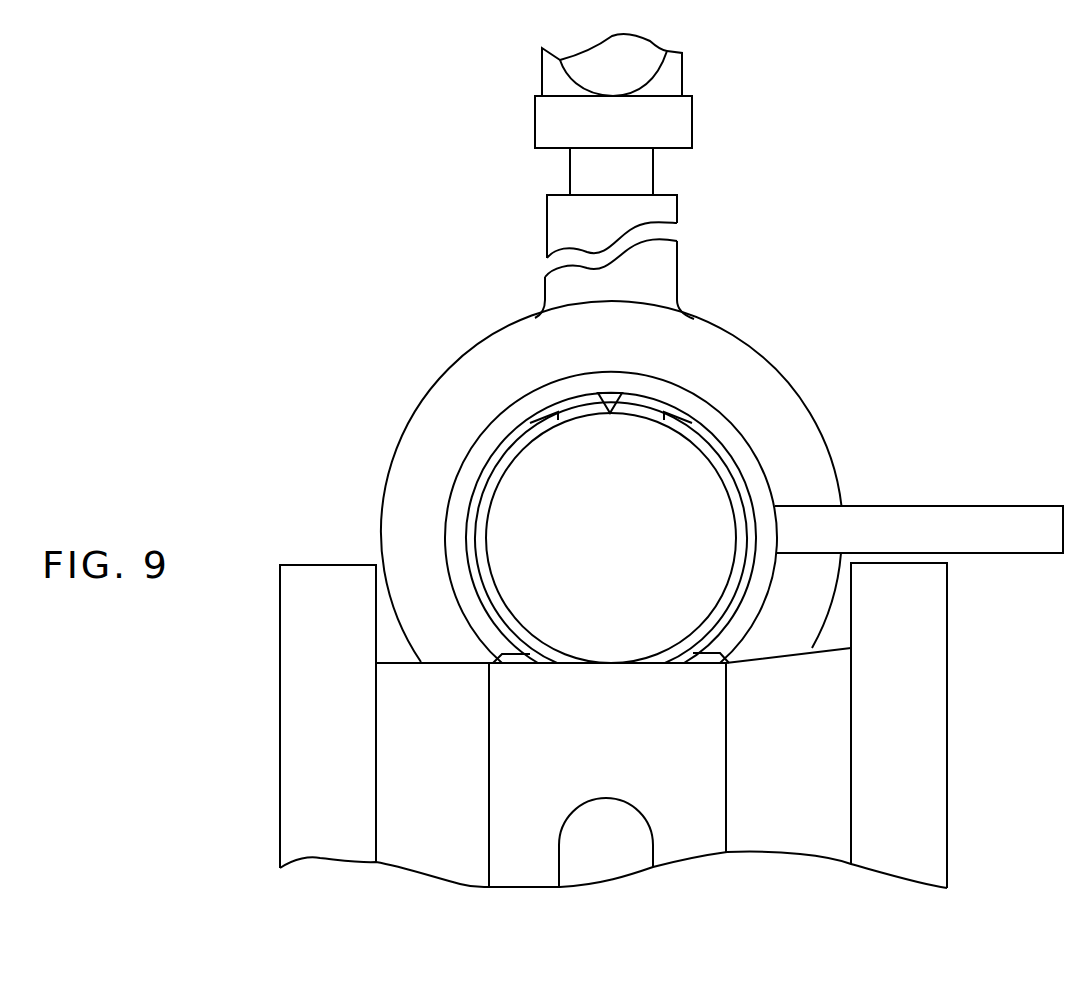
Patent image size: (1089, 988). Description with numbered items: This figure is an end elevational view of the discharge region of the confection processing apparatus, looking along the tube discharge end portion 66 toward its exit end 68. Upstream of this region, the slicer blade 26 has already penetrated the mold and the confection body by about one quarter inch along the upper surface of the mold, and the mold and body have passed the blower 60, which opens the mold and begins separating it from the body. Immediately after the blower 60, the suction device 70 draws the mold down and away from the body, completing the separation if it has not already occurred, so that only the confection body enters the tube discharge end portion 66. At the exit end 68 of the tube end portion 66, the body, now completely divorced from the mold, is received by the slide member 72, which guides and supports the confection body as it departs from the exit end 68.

The blower 60 is at (680, 267).
The blade 26 is at (662, 400).
The tube discharge end portion 66 is at (802, 402).
The exit end 68 is at (785, 448).
The slide member 72 is at (610, 662).
The suction device 70 is at (780, 832).